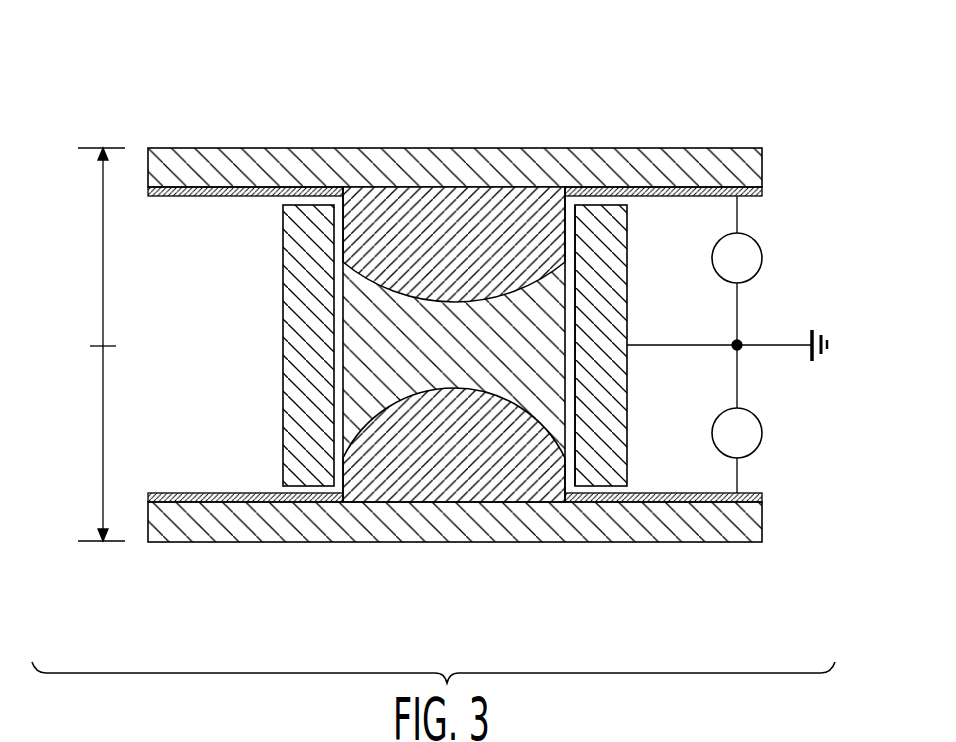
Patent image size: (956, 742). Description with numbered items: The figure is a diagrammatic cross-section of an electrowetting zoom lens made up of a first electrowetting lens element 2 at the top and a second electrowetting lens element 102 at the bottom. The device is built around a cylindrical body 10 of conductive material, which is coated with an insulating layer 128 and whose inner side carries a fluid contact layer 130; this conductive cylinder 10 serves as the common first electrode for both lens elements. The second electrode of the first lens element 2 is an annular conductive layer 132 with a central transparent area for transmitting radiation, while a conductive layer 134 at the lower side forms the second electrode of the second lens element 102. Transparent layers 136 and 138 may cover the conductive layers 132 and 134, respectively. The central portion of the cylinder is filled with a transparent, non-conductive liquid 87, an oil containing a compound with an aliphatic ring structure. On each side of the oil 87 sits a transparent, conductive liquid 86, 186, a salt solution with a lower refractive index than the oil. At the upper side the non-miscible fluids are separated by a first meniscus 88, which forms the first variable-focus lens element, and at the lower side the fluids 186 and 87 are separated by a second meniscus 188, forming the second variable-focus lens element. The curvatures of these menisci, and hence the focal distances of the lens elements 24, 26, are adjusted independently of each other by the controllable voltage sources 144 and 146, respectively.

The first electrowetting lens element 2 is at (93, 337).
The cylindrical body 10 is at (304, 275).
The first lens element 24 is at (466, 182).
The second lens element 26 is at (455, 510).
The first transparent and conductive liquid 86 is at (357, 215).
The transparent and non-conductive liquid 87 is at (378, 318).
The first meniscus 88 is at (585, 293).
The second electrowetting lens element 102 is at (81, 542).
The insulating layer 128 is at (336, 377).
The fluid contact layer 130 is at (360, 415).
The annular conductive layer 132 is at (753, 180).
The conductive layer 134 is at (564, 504).
The transparent layer 136 is at (214, 158).
The transparent layer 138 is at (683, 533).
The controllable voltage source 144 is at (761, 247).
The controllable voltage source 146 is at (759, 446).
The first transparent and conductive liquid 186 is at (390, 460).
The second meniscus 188 is at (580, 427).